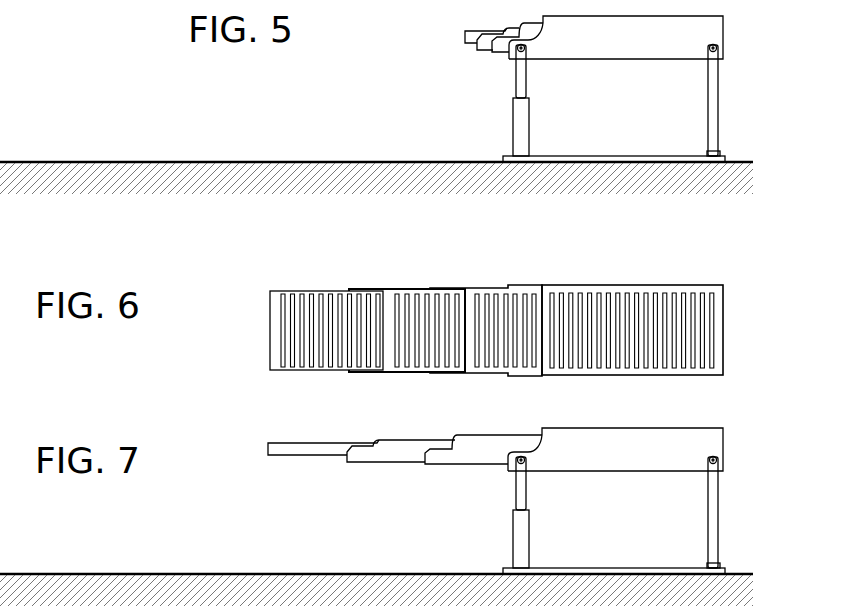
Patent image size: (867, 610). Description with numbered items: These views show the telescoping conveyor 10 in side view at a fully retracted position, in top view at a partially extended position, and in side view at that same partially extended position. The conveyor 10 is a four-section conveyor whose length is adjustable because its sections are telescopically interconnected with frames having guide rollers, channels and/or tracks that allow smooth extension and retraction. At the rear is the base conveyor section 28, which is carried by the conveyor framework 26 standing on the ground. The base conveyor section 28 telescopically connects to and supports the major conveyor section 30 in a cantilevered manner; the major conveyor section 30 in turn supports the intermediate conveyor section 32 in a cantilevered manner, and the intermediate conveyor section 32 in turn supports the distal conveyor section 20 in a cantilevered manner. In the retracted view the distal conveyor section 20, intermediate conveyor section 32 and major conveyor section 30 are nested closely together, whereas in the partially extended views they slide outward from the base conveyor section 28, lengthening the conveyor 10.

In FIG. 5, the conveyor 10 is at (405, 40).
In FIG. 6, the conveyor 10 is at (237, 340).
In FIG. 7, the conveyor 10 is at (240, 441).
In FIG. 5, the distal conveyor section 20 is at (465, 47).
In FIG. 6, the distal conveyor section 20 is at (307, 290).
In FIG. 7, the distal conveyor section 20 is at (297, 458).
In FIG. 5, the intermediate conveyor section 32 is at (484, 52).
In FIG. 6, the intermediate conveyor section 32 is at (412, 288).
In FIG. 7, the intermediate conveyor section 32 is at (401, 451).
In FIG. 5, the major conveyor section 30 is at (535, 21).
In FIG. 6, the major conveyor section 30 is at (493, 288).
In FIG. 7, the major conveyor section 30 is at (483, 449).
In FIG. 5, the base conveyor section 28 is at (625, 60).
In FIG. 6, the base conveyor section 28 is at (635, 285).
In FIG. 7, the base conveyor section 28 is at (615, 449).
In FIG. 5, the conveyor framework 26 is at (491, 123).
In FIG. 7, the conveyor framework 26 is at (614, 515).